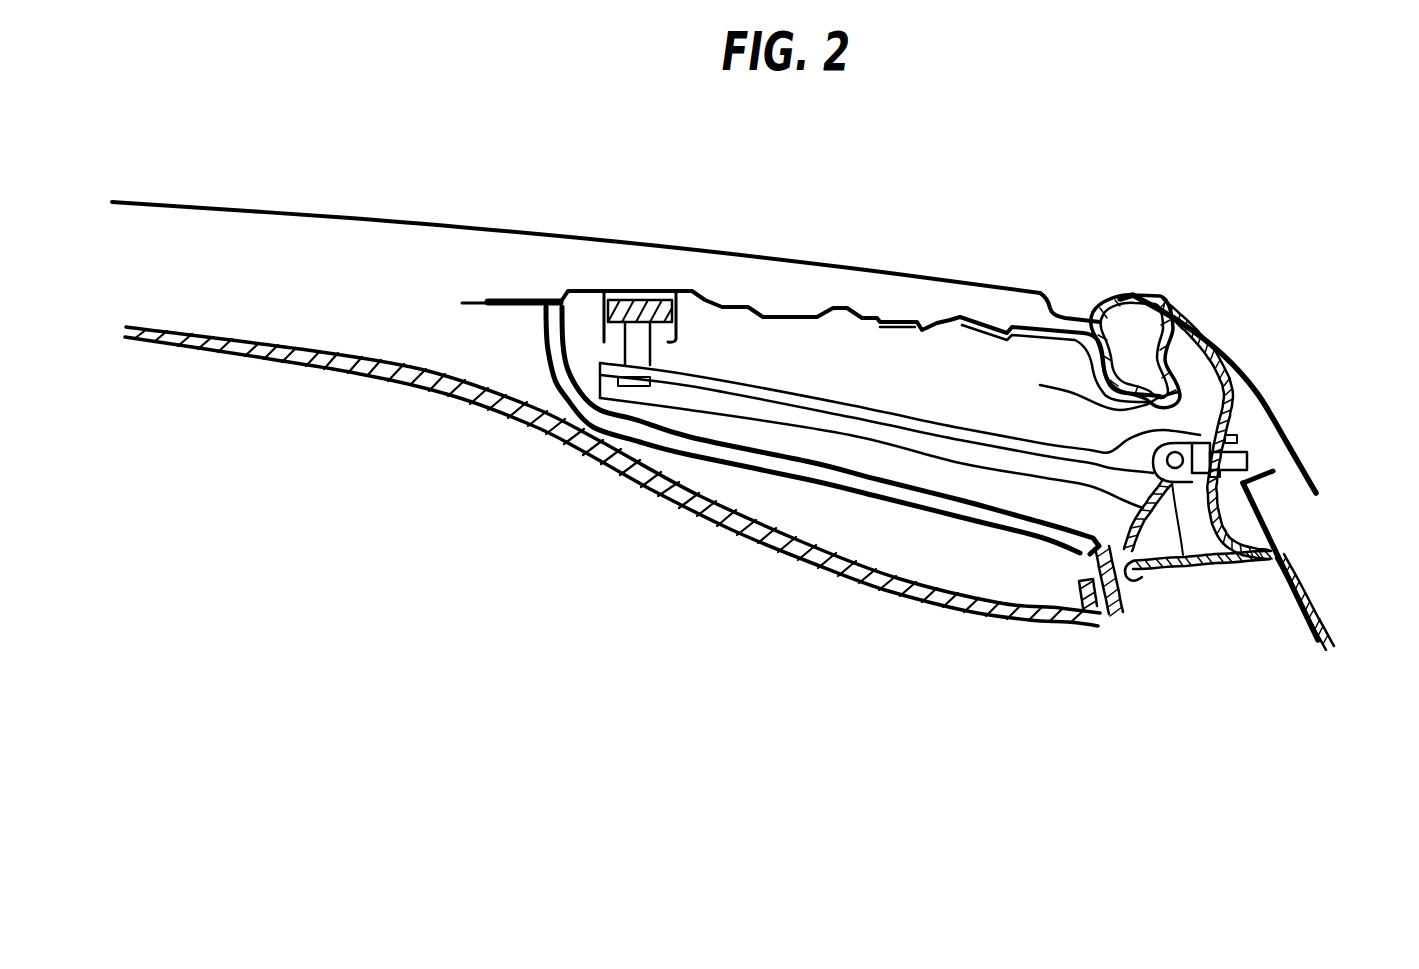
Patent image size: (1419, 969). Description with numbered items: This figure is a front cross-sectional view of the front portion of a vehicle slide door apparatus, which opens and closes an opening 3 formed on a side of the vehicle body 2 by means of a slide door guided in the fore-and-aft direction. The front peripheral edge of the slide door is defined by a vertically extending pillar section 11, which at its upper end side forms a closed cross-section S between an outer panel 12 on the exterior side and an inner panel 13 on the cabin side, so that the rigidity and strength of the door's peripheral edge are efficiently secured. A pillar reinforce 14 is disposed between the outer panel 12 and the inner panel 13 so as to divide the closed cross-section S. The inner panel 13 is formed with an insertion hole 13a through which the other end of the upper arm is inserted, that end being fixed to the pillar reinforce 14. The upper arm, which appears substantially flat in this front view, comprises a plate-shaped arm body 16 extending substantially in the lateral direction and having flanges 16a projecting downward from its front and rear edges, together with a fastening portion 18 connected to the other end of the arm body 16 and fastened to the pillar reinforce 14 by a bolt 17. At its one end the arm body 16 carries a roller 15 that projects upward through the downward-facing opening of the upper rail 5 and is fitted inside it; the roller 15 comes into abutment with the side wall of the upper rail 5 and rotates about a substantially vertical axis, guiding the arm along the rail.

The vehicle body 2 is at (1040, 293).
The opening 3 is at (1100, 407).
The upper rail 5 is at (690, 290).
The pillar section 11 is at (1213, 284).
The outer panel 12 is at (1250, 362).
The inner panel 13 is at (1225, 572).
The insertion hole 13a is at (1150, 505).
The pillar reinforce 14 is at (1233, 522).
The roller 15 is at (642, 290).
The arm body 16 is at (832, 410).
The flanges 16a is at (885, 443).
The bolt 17 is at (1262, 447).
The fastening portion 18 is at (1197, 571).
The closed cross-section S is at (1265, 415).